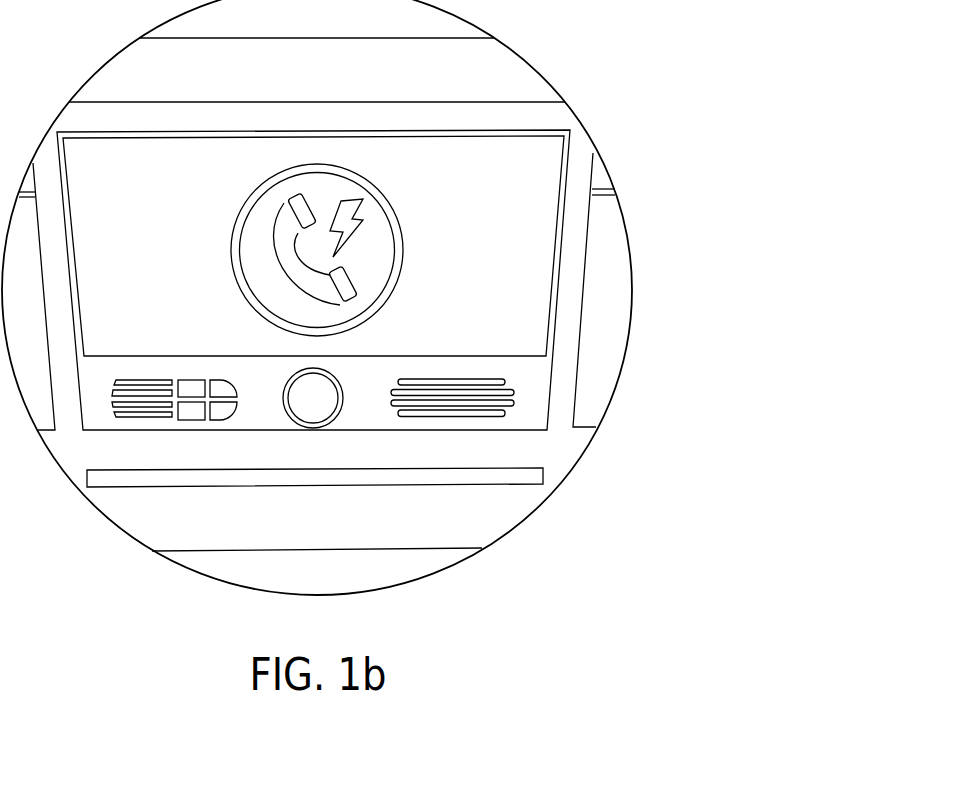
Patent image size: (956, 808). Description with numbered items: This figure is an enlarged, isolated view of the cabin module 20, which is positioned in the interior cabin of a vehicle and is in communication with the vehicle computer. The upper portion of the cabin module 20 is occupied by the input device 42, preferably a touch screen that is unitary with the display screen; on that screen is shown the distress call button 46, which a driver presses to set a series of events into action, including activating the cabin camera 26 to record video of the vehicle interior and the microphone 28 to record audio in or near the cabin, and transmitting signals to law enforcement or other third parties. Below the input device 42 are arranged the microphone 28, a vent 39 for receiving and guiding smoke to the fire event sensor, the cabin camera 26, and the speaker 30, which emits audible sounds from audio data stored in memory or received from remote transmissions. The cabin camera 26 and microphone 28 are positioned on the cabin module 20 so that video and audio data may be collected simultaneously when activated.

The cabin module 20 is at (572, 267).
The input device 42 is at (520, 176).
The distress call button 46 is at (340, 175).
The microphone 28 is at (132, 413).
The vent 39 is at (188, 412).
The cabin camera 26 is at (320, 407).
The speaker 30 is at (493, 402).